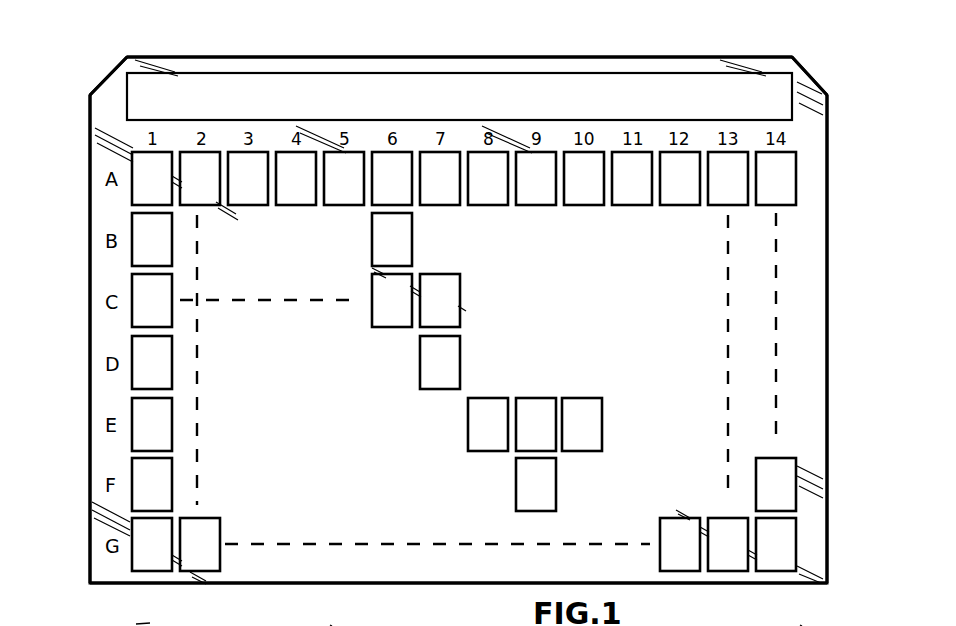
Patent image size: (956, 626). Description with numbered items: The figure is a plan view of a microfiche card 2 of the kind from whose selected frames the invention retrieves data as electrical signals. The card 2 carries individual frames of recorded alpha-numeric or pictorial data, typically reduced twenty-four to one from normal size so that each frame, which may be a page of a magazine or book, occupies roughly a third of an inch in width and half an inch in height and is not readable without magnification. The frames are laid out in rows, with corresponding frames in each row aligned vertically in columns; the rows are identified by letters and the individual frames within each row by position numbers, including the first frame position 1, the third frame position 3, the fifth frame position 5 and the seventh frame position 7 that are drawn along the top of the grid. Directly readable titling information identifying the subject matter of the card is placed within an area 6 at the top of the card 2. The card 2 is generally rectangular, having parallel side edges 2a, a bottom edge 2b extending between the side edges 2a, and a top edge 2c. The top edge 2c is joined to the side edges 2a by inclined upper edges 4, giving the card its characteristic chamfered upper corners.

The game piece square 1 is at (130, 265).
The microfiche card 2 is at (88, 219).
The side edge 2a is at (88, 406).
The bottom edge 2b is at (417, 585).
The top edge 2c is at (371, 57).
The board support 3 is at (134, 620).
The inclined upper edge 4 is at (114, 70).
The board base 5 is at (794, 622).
The area 6 is at (207, 73).
The board member 7 is at (322, 620).